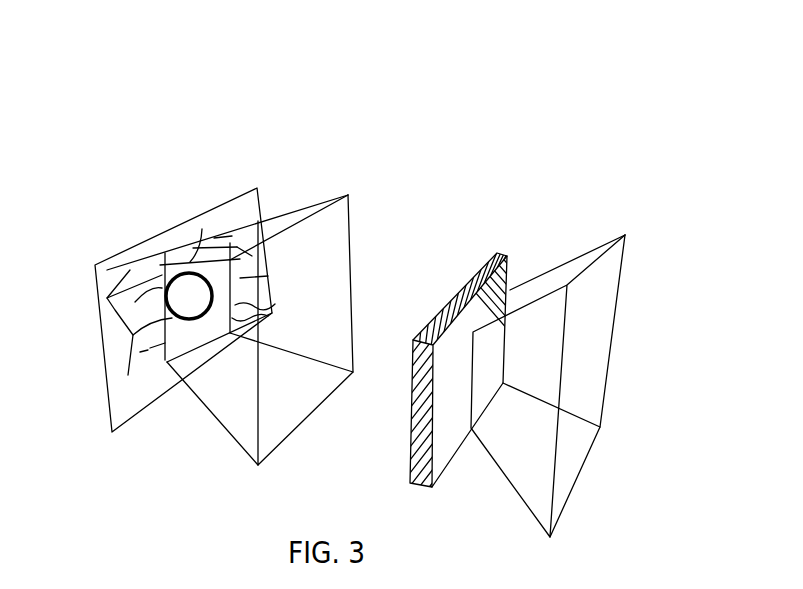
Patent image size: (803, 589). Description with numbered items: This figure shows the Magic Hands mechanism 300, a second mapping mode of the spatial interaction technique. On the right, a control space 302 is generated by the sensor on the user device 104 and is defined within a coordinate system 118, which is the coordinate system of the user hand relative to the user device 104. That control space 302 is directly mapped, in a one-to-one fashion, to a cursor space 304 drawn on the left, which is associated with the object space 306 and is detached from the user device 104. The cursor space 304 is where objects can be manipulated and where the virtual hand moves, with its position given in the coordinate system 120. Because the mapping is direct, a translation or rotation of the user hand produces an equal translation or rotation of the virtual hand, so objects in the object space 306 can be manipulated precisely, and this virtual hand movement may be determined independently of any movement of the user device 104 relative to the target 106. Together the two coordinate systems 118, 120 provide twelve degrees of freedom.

The Magic Hands mechanism 300 is at (390, 122).
The object space 306 is at (178, 147).
The control space 302 is at (549, 177).
The cursor space 304 is at (330, 292).
The target 106 is at (105, 395).
The coordinate system 120 is at (225, 427).
The user device 104 is at (420, 485).
The coordinate system 118 is at (562, 513).